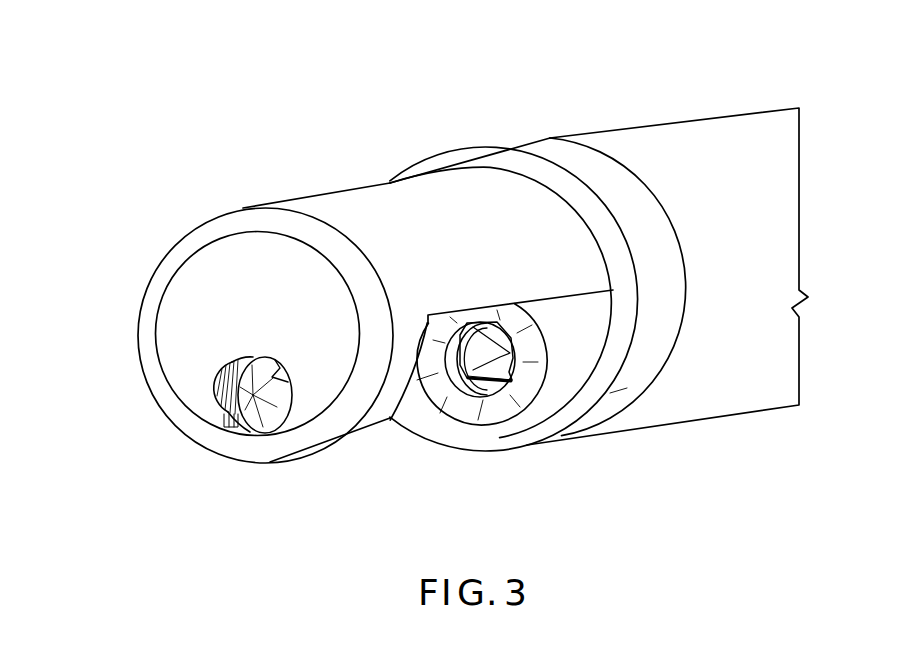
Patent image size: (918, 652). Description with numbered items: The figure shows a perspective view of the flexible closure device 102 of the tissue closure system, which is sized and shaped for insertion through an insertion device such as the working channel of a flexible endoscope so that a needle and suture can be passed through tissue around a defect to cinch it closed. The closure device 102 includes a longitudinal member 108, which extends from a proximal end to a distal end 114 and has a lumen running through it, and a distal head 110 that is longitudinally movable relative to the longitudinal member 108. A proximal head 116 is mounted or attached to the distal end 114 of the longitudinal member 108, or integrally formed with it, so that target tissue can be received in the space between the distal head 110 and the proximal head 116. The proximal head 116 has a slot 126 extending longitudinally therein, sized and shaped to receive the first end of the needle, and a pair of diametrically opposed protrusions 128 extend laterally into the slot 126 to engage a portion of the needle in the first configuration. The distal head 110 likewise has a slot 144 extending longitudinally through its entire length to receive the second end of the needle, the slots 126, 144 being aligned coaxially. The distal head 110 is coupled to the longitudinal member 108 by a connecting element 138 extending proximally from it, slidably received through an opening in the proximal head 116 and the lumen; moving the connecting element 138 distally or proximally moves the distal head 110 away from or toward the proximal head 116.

The closure device 102 is at (312, 140).
The longitudinal member 108 is at (638, 125).
The distal head 110 is at (148, 293).
The distal end 114 is at (562, 135).
The proximal head 116 is at (578, 360).
The slot 126 is at (536, 395).
The protrusions 128 is at (478, 388).
The connecting element 138 is at (385, 207).
The slot 144 is at (238, 430).